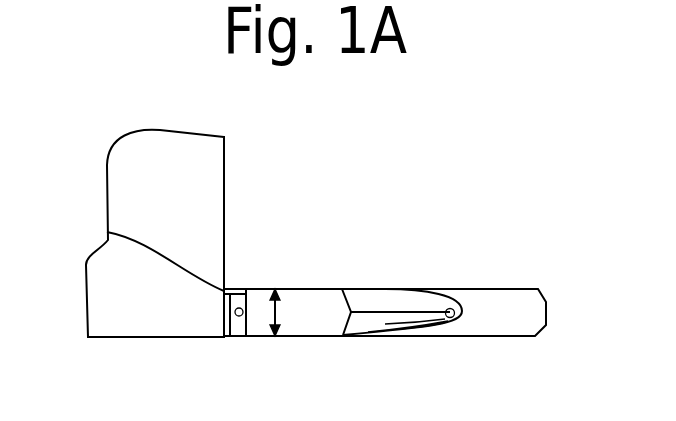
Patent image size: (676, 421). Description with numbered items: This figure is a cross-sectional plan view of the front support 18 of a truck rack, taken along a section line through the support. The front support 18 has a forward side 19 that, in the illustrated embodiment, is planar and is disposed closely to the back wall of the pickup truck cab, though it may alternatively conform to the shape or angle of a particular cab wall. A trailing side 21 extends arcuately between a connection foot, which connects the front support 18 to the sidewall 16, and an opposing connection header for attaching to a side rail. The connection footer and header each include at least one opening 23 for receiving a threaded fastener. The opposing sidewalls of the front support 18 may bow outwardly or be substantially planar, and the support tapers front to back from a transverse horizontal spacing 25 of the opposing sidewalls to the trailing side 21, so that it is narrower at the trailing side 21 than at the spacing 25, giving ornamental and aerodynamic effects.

The sidewall 16 is at (500, 327).
The front support 18 is at (303, 302).
The forward side 19 is at (112, 231).
The trailing side 21 is at (373, 305).
The opening 23 is at (239, 317).
The transverse horizontal spacing 25 is at (277, 310).